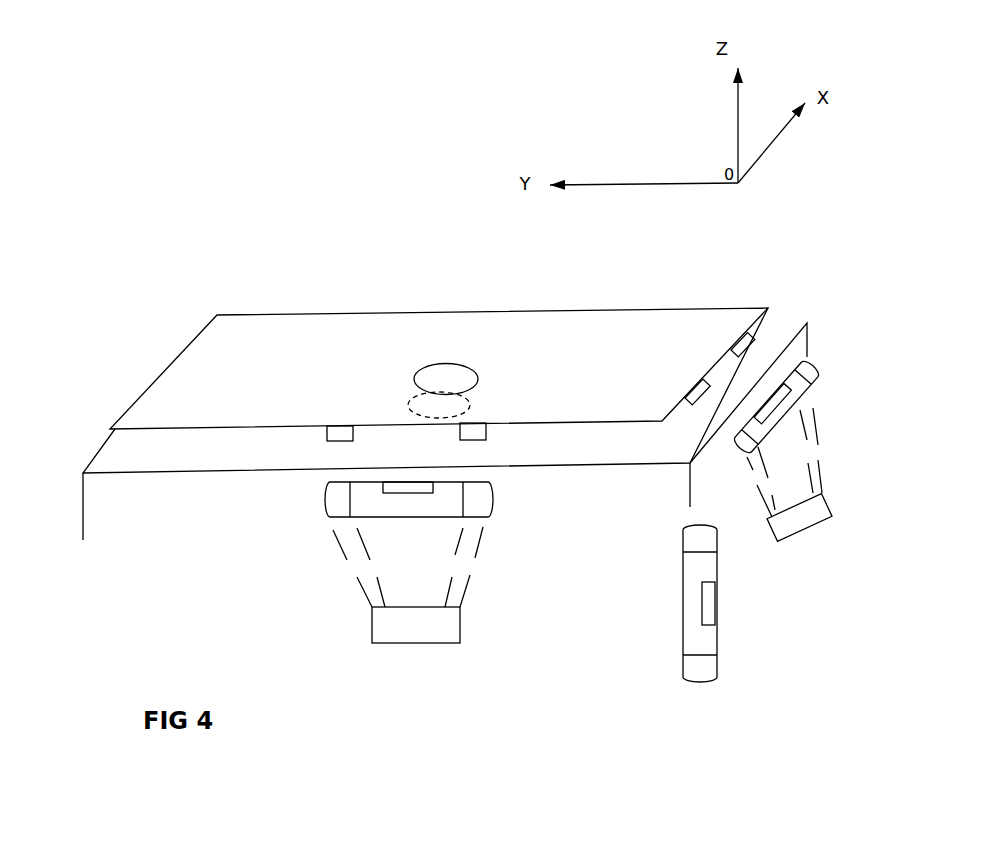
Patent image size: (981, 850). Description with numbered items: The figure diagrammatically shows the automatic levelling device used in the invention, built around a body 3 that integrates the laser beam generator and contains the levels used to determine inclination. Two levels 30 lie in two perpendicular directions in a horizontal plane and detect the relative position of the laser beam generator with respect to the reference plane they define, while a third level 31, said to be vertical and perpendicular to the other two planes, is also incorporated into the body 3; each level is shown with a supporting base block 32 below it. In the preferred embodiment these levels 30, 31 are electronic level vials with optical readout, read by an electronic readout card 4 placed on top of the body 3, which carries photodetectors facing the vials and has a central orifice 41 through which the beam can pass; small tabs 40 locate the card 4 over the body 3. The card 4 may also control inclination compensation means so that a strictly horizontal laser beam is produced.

The body 3 is at (141, 448).
The electronic readout card 4 is at (207, 362).
The levels 30 is at (690, 464).
The third level 31 is at (688, 566).
The base block 32 is at (387, 635).
The tabs 40 is at (487, 427).
The knob 41 is at (453, 368).